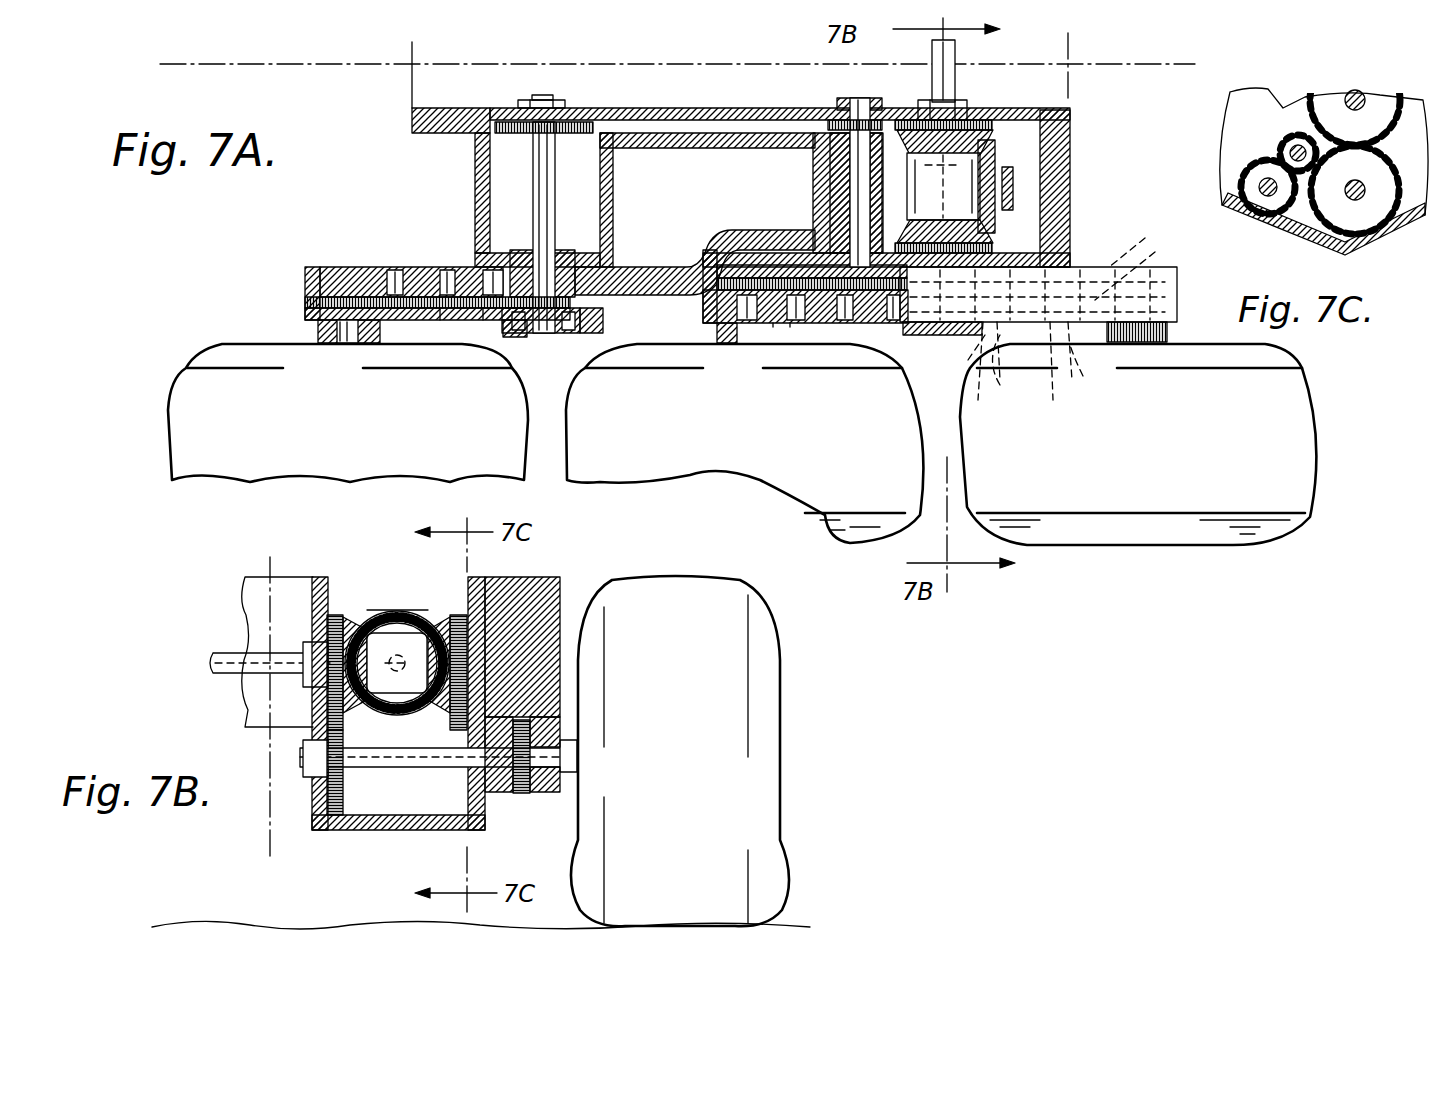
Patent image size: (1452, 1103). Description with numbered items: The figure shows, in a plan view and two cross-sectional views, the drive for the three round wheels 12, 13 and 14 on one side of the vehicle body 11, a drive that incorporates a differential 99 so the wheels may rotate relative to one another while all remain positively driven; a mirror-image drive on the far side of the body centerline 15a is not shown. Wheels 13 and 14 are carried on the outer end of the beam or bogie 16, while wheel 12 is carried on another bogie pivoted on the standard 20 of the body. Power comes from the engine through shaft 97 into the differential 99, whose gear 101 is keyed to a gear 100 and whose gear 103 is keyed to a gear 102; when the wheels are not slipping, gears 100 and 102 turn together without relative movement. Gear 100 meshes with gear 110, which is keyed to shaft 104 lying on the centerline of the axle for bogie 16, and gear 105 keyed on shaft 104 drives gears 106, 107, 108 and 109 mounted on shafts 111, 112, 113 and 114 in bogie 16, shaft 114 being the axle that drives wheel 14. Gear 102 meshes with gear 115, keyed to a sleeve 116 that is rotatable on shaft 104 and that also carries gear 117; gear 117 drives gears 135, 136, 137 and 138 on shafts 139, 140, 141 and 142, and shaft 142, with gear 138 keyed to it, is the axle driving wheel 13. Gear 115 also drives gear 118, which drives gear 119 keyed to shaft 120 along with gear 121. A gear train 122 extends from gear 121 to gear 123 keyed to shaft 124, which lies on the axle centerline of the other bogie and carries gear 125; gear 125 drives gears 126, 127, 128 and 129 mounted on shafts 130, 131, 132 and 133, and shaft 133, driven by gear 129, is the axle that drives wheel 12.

In FIG. 7A, the vehicle body 11 is at (1072, 120).
In FIG. 7A, the main wheel 12 is at (176, 420).
In FIG. 7A, the main wheel 13 is at (663, 470).
In FIG. 7A, the main wheel 14 is at (1313, 437).
In FIG. 7B, the main wheel 14 is at (778, 798).
In FIG. 7A, the axis line 15a is at (1147, 64).
In FIG. 7B, the axis line 15a is at (270, 832).
In FIG. 7B, the beam or bogie 16 is at (525, 805).
In FIG. 7A, the standard 20 is at (305, 278).
In FIG. 7A, the shaft 97 is at (957, 52).
In FIG. 7C, the shaft 97 is at (1352, 88).
In FIG. 7B, the shaft 97 is at (213, 665).
In FIG. 7A, the differential 99 is at (1022, 172).
In FIG. 7B, the differential 99 is at (371, 600).
In FIG. 7A, the gear 100 is at (905, 120).
In FIG. 7B, the gear 100 is at (333, 613).
In FIG. 7A, the differential gear 101 is at (970, 122).
In FIG. 7B, the differential gear 101 is at (345, 613).
In FIG. 7A, the gear 102 is at (993, 250).
In FIG. 7C, the gear 102 is at (1397, 82).
In FIG. 7B, the gear 102 is at (457, 613).
In FIG. 7A, the differential gear 103 is at (993, 220).
In FIG. 7B, the differential gear 103 is at (430, 612).
In FIG. 7C, the shaft 104 is at (1357, 202).
In FIG. 7B, the shaft 104 is at (360, 830).
In FIG. 7A, the gear 105 is at (906, 335).
In FIG. 7B, the gear 105 is at (522, 797).
In FIG. 7A, the gear 106 is at (1018, 367).
In FIG. 7A, the gear 107 is at (1083, 376).
In FIG. 7A, the gear 108 is at (1150, 258).
In FIG. 7A, the gear 109 is at (1178, 293).
In FIG. 7B, the gear 110 is at (337, 817).
In FIG. 7A, the shaft 111 is at (993, 380).
In FIG. 7A, the shaft 112 is at (1057, 345).
In FIG. 7A, the shaft 113 is at (1149, 242).
In FIG. 7A, the shaft 114 is at (1188, 312).
In FIG. 7C, the gear 115 is at (1342, 218).
In FIG. 7B, the gear 115 is at (467, 830).
In FIG. 7B, the sleeve 116 is at (483, 742).
In FIG. 7A, the gear 117 is at (966, 360).
In FIG. 7B, the gear 117 is at (513, 795).
In FIG. 7C, the gear 118 is at (1283, 108).
In FIG. 7A, the gear 119 is at (843, 220).
In FIG. 7C, the gear 119 is at (1248, 165).
In FIG. 7A, the shaft 120 is at (850, 163).
In FIG. 7C, the shaft 120 is at (1257, 186).
In FIG. 7A, the gear 121 is at (835, 108).
In FIG. 7A, the gear train 122 is at (742, 122).
In FIG. 7A, the gear 123 is at (510, 104).
In FIG. 7A, the shaft 124 is at (536, 157).
In FIG. 7A, the gear 125 is at (603, 332).
In FIG. 7A, the gear 126 is at (477, 313).
In FIG. 7A, the gear 127 is at (432, 277).
In FIG. 7A, the gear 128 is at (410, 313).
In FIG. 7A, the gear 129 is at (305, 302).
In FIG. 7A, the shaft 130 is at (488, 278).
In FIG. 7A, the shaft 131 is at (443, 315).
In FIG. 7A, the shaft 132 is at (372, 267).
In FIG. 7A, the shaft 133 is at (346, 343).
In FIG. 7A, the gear 135 is at (870, 327).
In FIG. 7A, the gear 136 is at (790, 327).
In FIG. 7A, the gear 137 is at (757, 327).
In FIG. 7A, the gear 138 is at (703, 295).
In FIG. 7A, the shaft 139 is at (888, 327).
In FIG. 7A, the shaft 140 is at (805, 327).
In FIG. 7A, the shaft 141 is at (773, 327).
In FIG. 7A, the shaft 142 is at (740, 343).